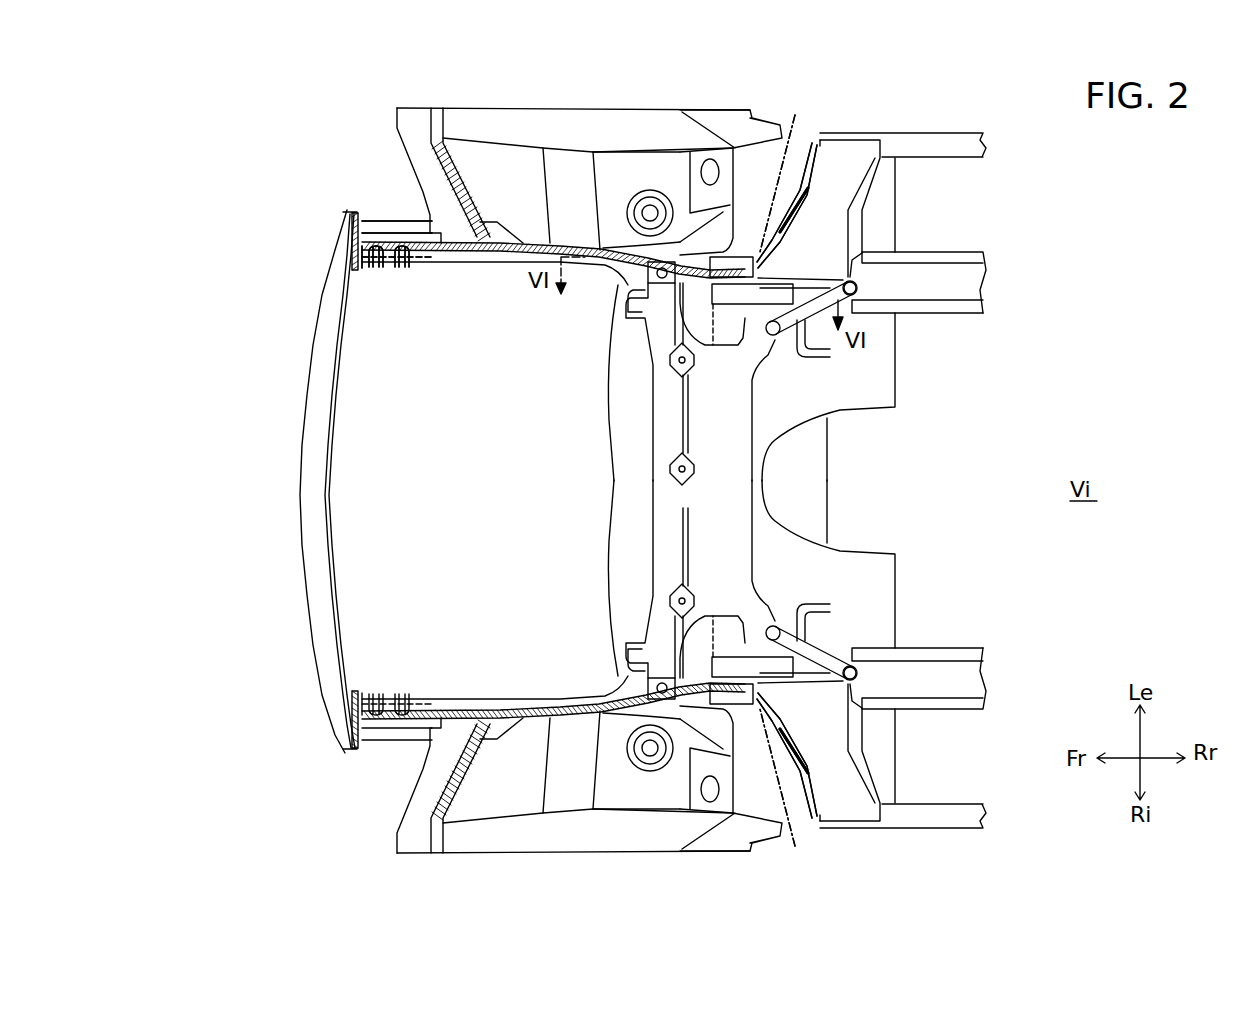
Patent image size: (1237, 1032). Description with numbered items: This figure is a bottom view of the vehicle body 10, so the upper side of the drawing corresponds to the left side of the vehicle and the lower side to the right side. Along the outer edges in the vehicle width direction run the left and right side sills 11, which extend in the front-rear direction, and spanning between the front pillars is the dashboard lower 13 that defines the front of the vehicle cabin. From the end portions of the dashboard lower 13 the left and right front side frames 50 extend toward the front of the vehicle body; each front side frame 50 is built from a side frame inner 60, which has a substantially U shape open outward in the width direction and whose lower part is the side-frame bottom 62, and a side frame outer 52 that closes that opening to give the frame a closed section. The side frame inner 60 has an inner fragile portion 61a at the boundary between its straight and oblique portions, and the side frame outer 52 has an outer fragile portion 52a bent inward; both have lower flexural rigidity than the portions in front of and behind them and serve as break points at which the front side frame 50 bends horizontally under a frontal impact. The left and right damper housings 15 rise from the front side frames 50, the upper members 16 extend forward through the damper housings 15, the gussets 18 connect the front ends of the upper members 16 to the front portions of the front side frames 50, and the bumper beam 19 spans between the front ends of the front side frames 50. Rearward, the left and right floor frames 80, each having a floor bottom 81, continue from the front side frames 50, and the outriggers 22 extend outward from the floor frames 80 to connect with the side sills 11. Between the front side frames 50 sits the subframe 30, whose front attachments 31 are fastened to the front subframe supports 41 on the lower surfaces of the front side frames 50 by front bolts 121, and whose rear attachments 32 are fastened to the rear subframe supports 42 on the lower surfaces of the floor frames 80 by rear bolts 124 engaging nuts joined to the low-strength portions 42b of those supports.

The vehicle body 10 is at (240, 173).
The side sill 11 is at (948, 131).
The dashboard lower 13 is at (875, 585).
The damper housing 15 is at (643, 165).
The upper member 16 is at (525, 124).
The gusset 18 is at (418, 128).
The bumper beam 19 is at (310, 537).
The outrigger 22 is at (850, 163).
The subframe 30 is at (653, 440).
The front attachment 31 is at (640, 300).
The rear attachment 32 is at (787, 342).
The front subframe support 41 is at (590, 255).
The rear subframe support 42 is at (810, 864).
The low-strength portion 42b is at (787, 480).
The front side frame 50 is at (443, 337).
The side frame outer 52 is at (389, 265).
The outer fragile portion 52a is at (522, 240).
The side frame inner 60 is at (432, 268).
The inner fragile portion 61a is at (577, 263).
The side-frame bottom 62 is at (478, 258).
The floor frame 80 is at (960, 249).
The floor bottom 81 is at (947, 285).
The front bolt 121 is at (648, 312).
The rear bolt 124 is at (790, 345).